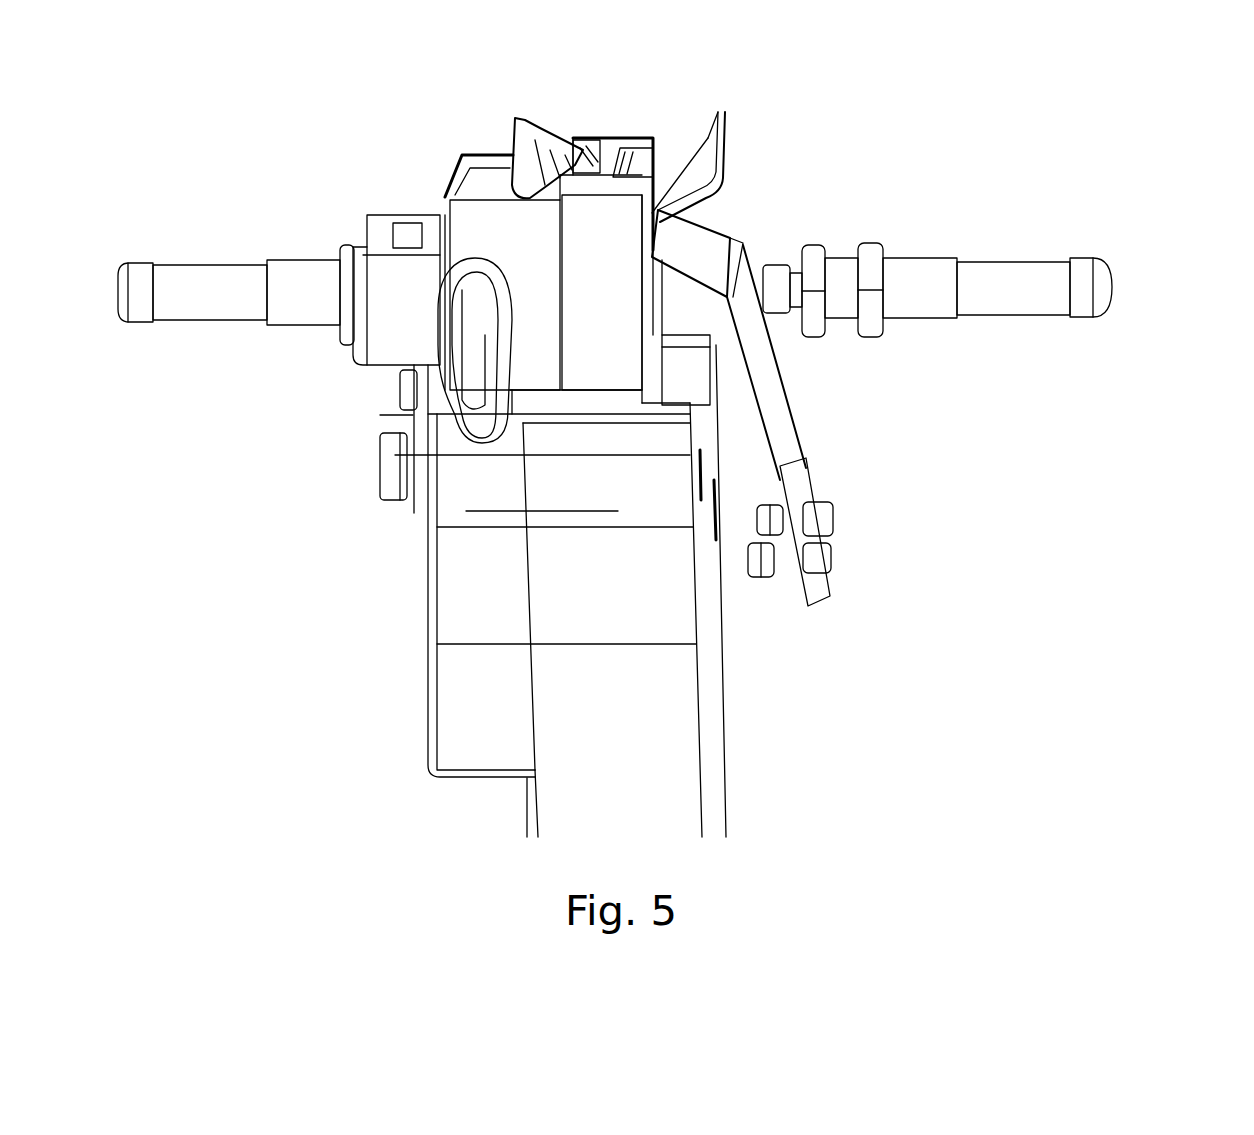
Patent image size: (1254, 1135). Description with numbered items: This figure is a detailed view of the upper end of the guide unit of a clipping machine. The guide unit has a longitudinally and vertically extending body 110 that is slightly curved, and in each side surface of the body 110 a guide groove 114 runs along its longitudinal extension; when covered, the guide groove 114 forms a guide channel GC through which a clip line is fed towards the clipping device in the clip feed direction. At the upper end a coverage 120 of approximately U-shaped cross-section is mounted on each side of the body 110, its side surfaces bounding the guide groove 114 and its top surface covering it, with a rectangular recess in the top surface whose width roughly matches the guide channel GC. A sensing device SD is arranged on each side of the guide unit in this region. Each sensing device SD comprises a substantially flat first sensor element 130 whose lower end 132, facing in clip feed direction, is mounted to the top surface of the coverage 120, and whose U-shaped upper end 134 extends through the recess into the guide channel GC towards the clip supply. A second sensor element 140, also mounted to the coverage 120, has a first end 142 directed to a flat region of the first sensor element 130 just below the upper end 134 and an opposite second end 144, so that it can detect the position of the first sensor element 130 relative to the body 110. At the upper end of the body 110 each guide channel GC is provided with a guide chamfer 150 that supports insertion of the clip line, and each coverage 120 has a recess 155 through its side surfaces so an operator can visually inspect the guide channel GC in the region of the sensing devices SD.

The body 110 is at (625, 712).
The guide groove 114 is at (680, 380).
The coverage 120 is at (470, 690).
The first sensor element 130 is at (740, 290).
The lower end 132 is at (803, 502).
The upper end 134 is at (522, 117).
The second sensor element 140 is at (222, 242).
The first end 142 is at (777, 278).
The second end 144 is at (1083, 270).
The guide chamfer 150 is at (593, 150).
The recess 155 is at (453, 430).
The guide channel GC is at (482, 183).
The sensing device SD is at (1030, 140).